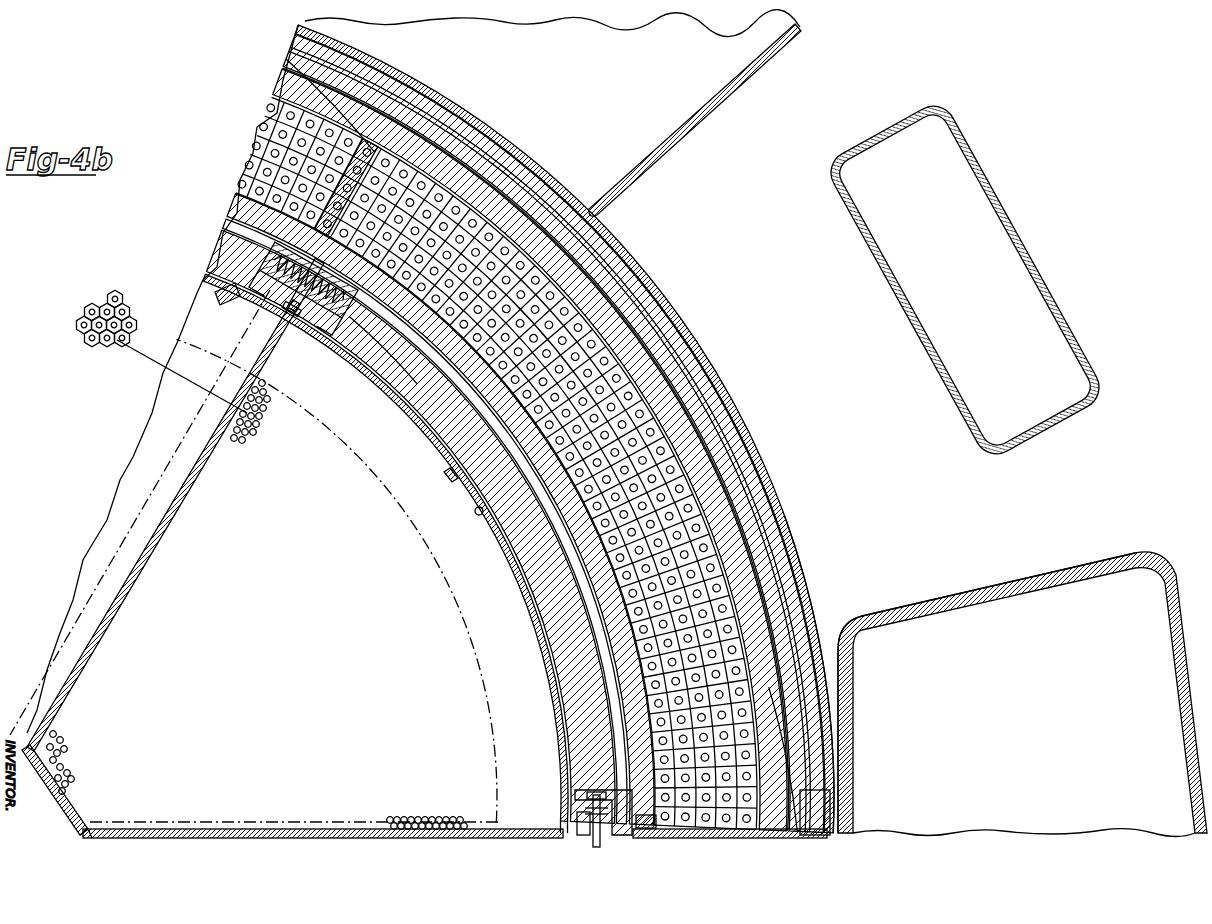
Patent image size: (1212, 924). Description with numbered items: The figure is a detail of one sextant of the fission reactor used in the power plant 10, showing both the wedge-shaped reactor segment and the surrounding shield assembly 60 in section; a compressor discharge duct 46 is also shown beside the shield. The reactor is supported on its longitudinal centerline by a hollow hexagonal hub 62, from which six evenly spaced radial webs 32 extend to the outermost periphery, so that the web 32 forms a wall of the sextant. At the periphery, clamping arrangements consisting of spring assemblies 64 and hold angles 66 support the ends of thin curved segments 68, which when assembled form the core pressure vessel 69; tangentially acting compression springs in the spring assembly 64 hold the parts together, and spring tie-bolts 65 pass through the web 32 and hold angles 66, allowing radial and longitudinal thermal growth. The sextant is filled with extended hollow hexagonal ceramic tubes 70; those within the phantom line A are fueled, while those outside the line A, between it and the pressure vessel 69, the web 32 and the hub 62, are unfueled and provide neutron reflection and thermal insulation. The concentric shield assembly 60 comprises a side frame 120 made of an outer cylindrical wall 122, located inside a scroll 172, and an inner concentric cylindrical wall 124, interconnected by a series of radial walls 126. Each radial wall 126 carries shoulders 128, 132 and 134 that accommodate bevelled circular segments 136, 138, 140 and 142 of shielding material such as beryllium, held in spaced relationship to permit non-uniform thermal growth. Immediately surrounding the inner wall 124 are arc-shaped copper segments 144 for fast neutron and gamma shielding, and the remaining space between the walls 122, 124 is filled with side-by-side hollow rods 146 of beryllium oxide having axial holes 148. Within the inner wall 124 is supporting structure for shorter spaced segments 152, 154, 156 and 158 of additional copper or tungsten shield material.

The power plant 10 is at (905, 300).
The compressor discharge duct 46 is at (1132, 398).
The shield assembly 60 is at (220, 121).
The radial web 32 is at (143, 580).
The hollow hub 62 is at (97, 837).
The hollow hexagonal ceramic tube 70 is at (98, 343).
The phantom line A is at (170, 565).
The shorter segment of shield material 158 is at (551, 642).
The shorter segment of shield material 156 is at (557, 590).
The shorter segment of shield material 152 is at (410, 377).
The shorter segment of shield material 154 is at (428, 436).
The inner cylindrical wall 124 is at (623, 703).
The rod of BeO 146 is at (650, 440).
The axial hole 148 is at (663, 487).
The radial wall 126 is at (338, 232).
The arc-shaped segment 144 is at (662, 775).
The circular segment of shielding material 142 is at (617, 343).
The circular segment of shielding material 140 is at (613, 313).
The circular segment of shielding material 138 is at (610, 277).
The circular segment of shielding material 136 is at (600, 243).
The shoulder 134 is at (412, 160).
The shoulder 132 is at (425, 150).
The shoulder 128 is at (402, 140).
The scroll 172 is at (815, 595).
The outer cylindrical wall 122 is at (838, 652).
The side frame 120 is at (800, 837).
The spring assembly 64 is at (250, 218).
The spring tie-bolt 65 is at (277, 292).
The hold angle 66 is at (277, 317).
The curved segment 68 is at (225, 292).
The core pressure vessel 69 is at (476, 514).